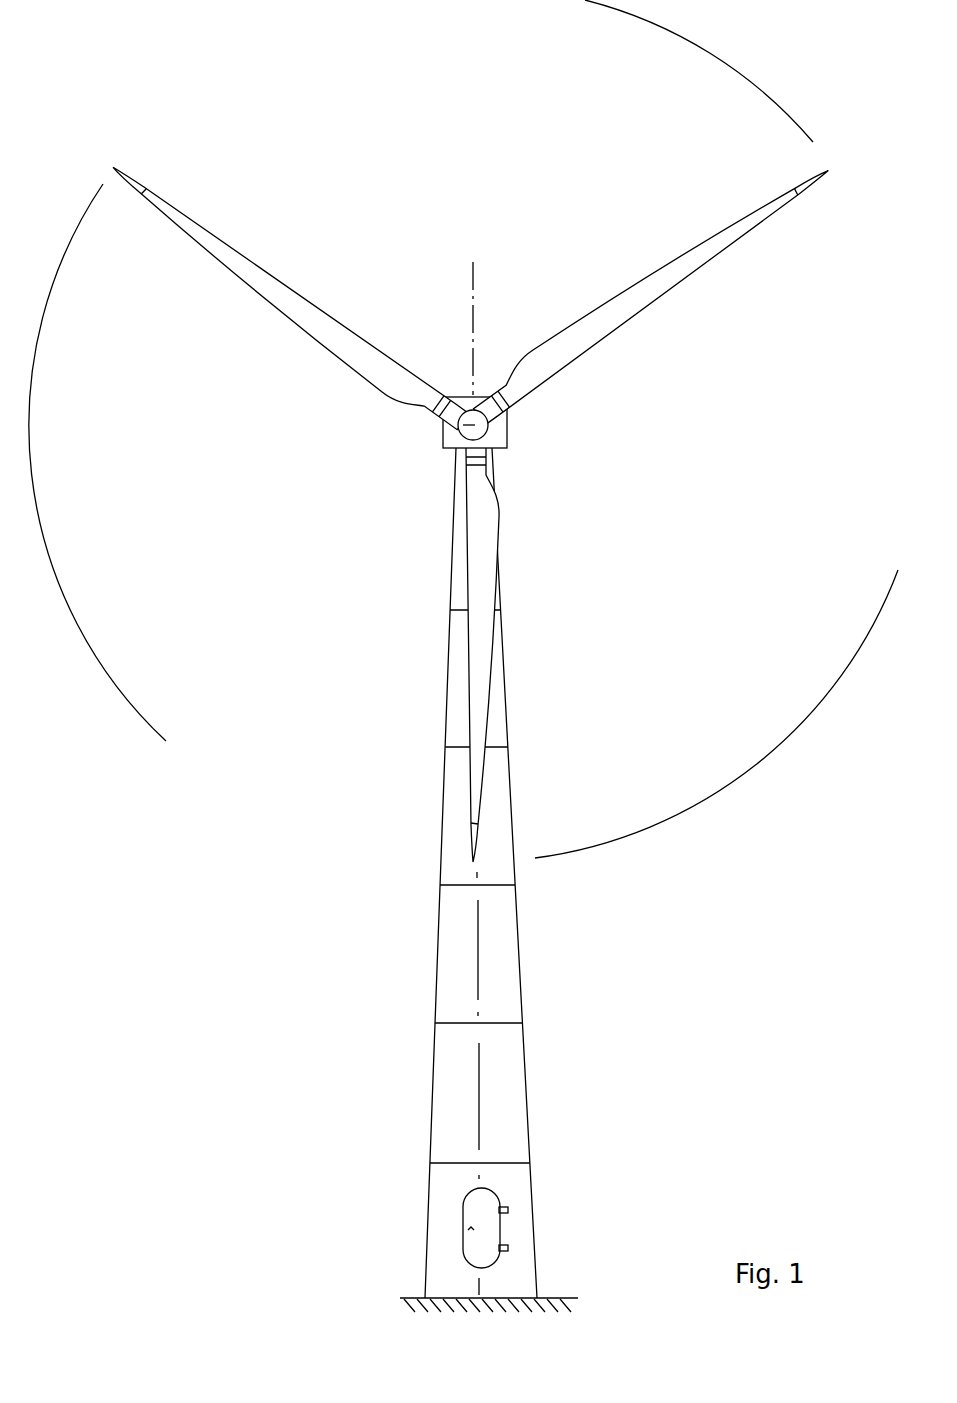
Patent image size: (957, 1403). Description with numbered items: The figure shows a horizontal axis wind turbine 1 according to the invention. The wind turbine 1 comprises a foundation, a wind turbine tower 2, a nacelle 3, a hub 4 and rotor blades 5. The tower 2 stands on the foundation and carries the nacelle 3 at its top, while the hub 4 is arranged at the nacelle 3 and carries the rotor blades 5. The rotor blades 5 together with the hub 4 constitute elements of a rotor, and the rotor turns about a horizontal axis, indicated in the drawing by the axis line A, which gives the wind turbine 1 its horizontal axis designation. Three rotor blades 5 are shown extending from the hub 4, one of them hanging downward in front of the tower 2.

The horizontal axis wind turbine 1 is at (465, 723).
The wind turbine tower 2 is at (500, 965).
The nacelle 3 is at (512, 435).
The hub 4 is at (466, 426).
The rotor blades 5 is at (478, 720).
The rotor axis A is at (476, 288).